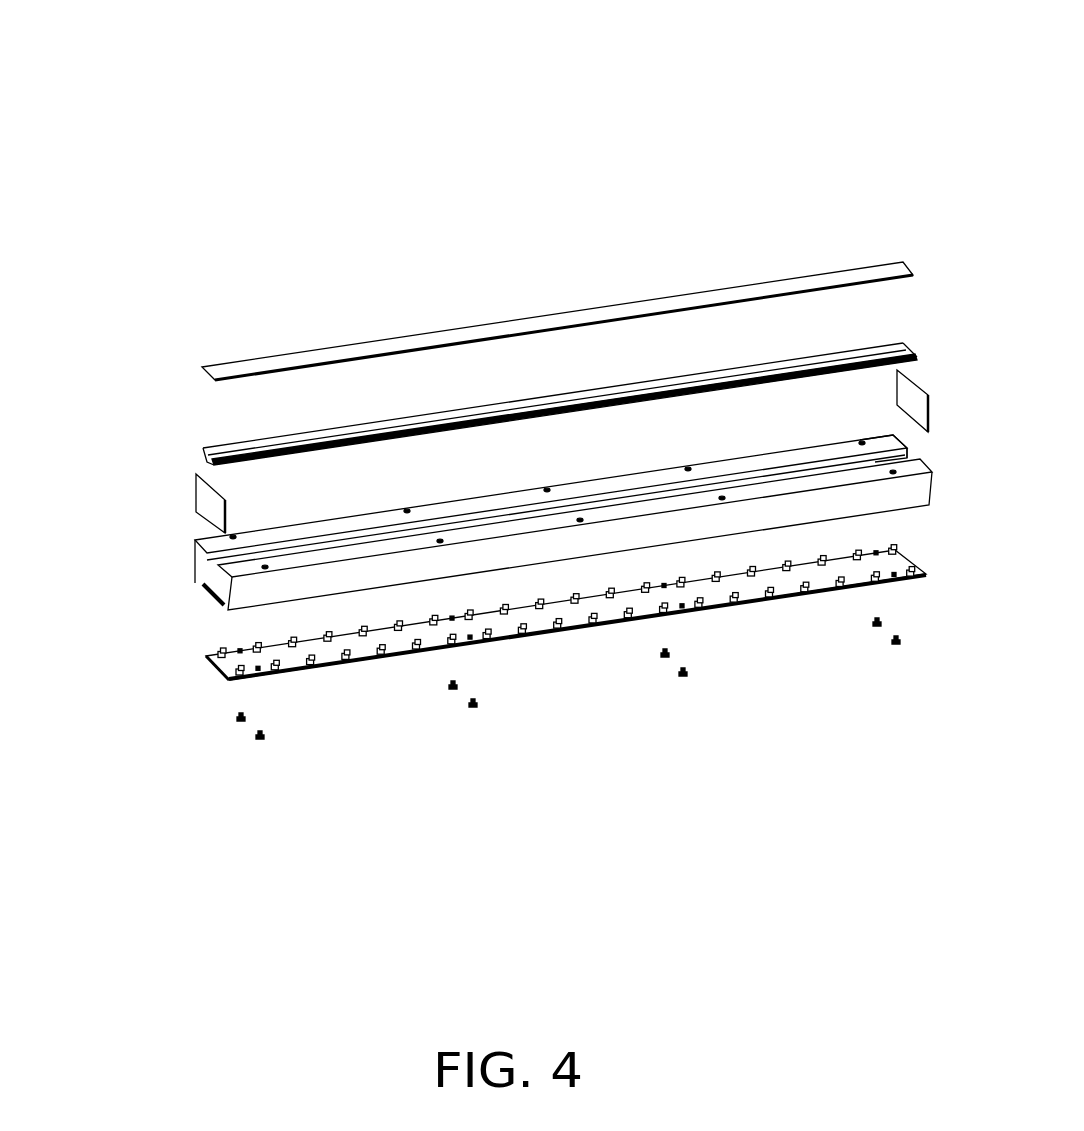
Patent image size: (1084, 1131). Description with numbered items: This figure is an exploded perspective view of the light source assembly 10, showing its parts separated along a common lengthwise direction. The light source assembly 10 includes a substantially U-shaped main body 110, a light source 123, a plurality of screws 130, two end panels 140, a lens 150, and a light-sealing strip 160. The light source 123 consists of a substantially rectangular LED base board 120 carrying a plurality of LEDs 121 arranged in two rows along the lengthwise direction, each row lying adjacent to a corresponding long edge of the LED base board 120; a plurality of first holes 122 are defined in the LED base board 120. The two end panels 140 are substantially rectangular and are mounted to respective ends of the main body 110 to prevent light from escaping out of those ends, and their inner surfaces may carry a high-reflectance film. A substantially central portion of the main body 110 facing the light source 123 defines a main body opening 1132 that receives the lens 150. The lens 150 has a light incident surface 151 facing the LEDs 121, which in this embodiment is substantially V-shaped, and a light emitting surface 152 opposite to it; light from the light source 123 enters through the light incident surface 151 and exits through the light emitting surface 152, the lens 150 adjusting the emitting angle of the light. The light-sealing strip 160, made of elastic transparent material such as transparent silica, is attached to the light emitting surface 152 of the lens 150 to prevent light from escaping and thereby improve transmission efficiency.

The light source assembly 10 is at (503, 40).
The main body 110 is at (530, 506).
The main body opening 1132 is at (883, 460).
The LED base board 120 is at (566, 658).
The LEDs 121 is at (383, 655).
The first holes 122 is at (688, 612).
The light source 123 is at (566, 683).
The screws 130 is at (237, 722).
The end panels 140 is at (207, 505).
The lens 150 is at (118, 392).
The light incident surface 151 is at (206, 453).
The light emitting surface 152 is at (223, 449).
The light-sealing strip 160 is at (245, 368).